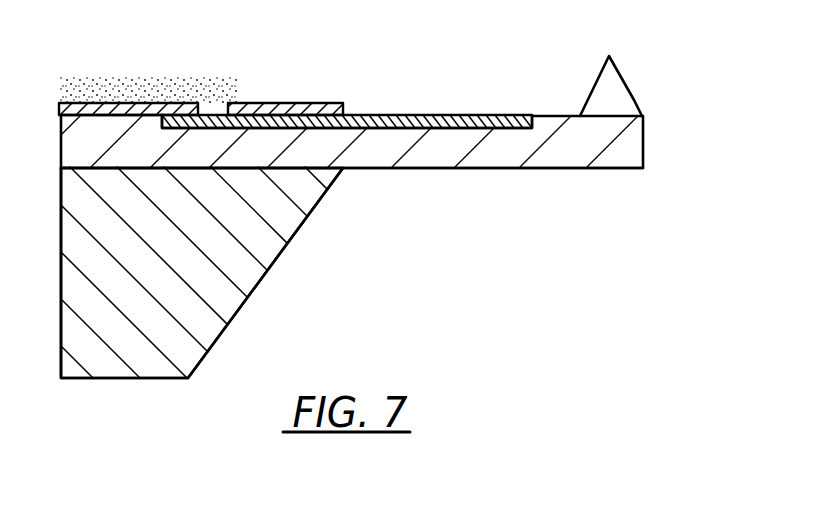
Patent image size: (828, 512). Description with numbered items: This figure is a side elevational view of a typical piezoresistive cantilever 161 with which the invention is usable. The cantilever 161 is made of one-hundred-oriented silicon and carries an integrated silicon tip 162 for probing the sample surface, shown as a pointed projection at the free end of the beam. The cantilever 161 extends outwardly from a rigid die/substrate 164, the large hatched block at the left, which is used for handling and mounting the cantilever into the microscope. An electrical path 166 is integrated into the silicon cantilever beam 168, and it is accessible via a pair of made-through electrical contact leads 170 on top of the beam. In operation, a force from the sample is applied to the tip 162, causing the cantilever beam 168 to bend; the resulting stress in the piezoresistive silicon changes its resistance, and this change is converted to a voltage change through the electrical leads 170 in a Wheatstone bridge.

The piezoresistive cantilever 161 is at (371, 55).
The silicon tip 162 is at (618, 87).
The die/substrate 164 is at (267, 275).
The electrical path 166 is at (463, 117).
The silicon cantilever beam 168 is at (593, 168).
The electrical contact leads 170 is at (263, 106).